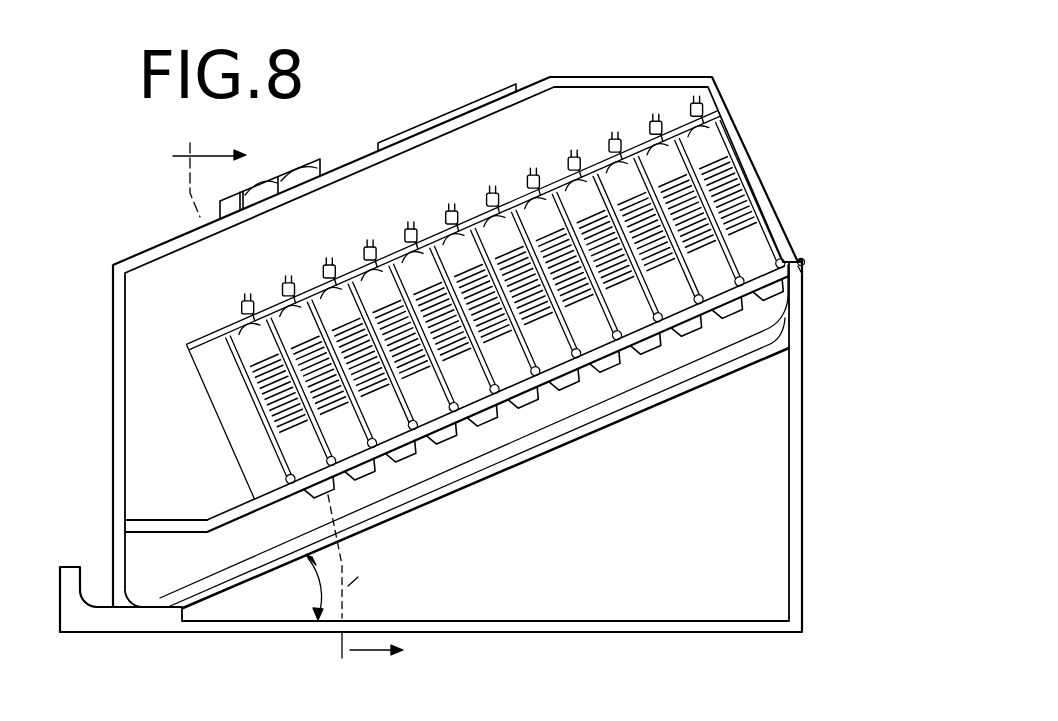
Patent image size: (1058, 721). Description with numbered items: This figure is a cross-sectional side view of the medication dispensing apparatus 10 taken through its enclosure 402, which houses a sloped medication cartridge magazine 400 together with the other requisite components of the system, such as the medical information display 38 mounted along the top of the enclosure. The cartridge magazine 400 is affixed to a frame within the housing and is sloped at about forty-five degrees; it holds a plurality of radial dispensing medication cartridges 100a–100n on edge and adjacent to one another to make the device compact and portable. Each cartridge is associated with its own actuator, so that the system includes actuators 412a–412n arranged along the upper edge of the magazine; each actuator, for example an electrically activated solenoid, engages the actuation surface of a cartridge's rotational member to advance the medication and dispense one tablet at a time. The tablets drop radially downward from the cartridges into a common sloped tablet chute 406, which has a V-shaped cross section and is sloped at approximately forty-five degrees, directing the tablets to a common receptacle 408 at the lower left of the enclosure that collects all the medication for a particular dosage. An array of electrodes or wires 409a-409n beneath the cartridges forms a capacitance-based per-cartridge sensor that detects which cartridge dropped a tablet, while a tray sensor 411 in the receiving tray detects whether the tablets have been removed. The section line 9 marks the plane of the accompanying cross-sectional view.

The medication dispensing apparatus 10 is at (461, 361).
The section line 9- 9 is at (285, 400).
The medical information display 38 is at (460, 113).
The radial dispensing medication cartridge 100a is at (781, 198).
The radial dispensing medication cartridge 100n is at (302, 449).
The medication cartridge magazine 400 is at (461, 361).
The enclosure 402 is at (113, 267).
The sloped tablet chute 406 is at (770, 336).
The common receptacle 408 is at (87, 595).
The array of electrodes or wires 409a-409n is at (290, 484).
The tray sensor 411 is at (133, 594).
The actuator 412a is at (697, 94).
The actuator 412n is at (245, 305).